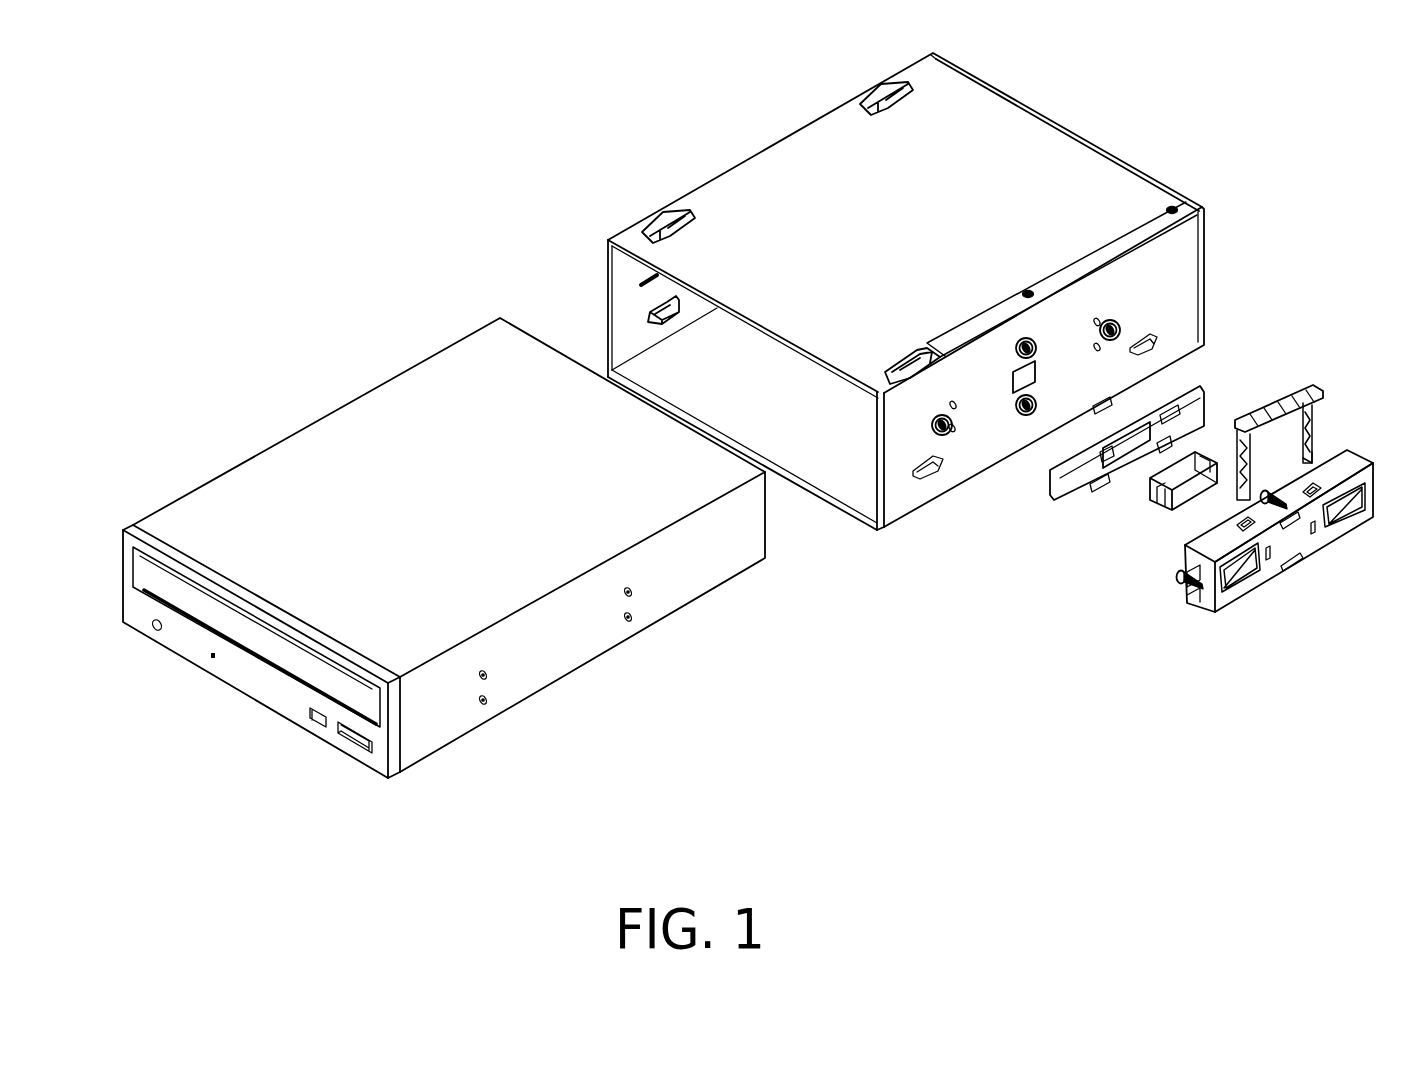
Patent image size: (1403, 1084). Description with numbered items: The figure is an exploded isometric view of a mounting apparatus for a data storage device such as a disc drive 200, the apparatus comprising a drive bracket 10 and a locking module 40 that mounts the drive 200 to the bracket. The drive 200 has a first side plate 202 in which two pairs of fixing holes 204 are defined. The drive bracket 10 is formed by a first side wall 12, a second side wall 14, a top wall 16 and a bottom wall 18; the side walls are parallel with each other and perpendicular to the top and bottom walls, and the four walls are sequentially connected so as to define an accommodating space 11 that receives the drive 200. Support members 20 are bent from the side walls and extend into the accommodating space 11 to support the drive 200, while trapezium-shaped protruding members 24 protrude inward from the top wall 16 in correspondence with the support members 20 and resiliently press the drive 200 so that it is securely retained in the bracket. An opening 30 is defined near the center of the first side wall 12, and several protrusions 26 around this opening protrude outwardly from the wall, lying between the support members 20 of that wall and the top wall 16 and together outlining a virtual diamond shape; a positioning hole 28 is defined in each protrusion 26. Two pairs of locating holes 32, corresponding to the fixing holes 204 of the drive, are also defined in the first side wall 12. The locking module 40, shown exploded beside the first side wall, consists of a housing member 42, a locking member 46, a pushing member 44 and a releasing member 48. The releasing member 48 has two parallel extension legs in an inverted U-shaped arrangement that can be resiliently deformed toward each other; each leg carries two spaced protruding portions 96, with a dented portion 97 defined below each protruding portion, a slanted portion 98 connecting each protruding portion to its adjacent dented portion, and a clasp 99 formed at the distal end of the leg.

The drive bracket 10 is at (776, 126).
The accommodating space 11 is at (663, 367).
The first side wall 12 is at (1183, 250).
The second side wall 14 is at (617, 262).
The top wall 16 is at (1040, 153).
The bottom wall 18 is at (833, 483).
The support members 20 is at (653, 308).
The protruding members 24 is at (662, 230).
The protrusions 26 is at (930, 436).
The positioning hole 28 is at (956, 433).
The opening 30 is at (1036, 378).
The locating holes 32 is at (956, 431).
The locking module 40 is at (1007, 565).
The housing member 42 is at (1200, 600).
The pushing member 44 is at (1157, 503).
The locking member 46 is at (1078, 480).
The releasing member 48 is at (1235, 485).
The protruding portions 96 is at (1318, 398).
The dented portion 97 is at (1315, 420).
The slanted portion 98 is at (1318, 410).
The clasp 99 is at (1305, 458).
The disc drive 200 is at (312, 392).
The first side plate 202 is at (680, 577).
The fixing holes 204 is at (630, 596).